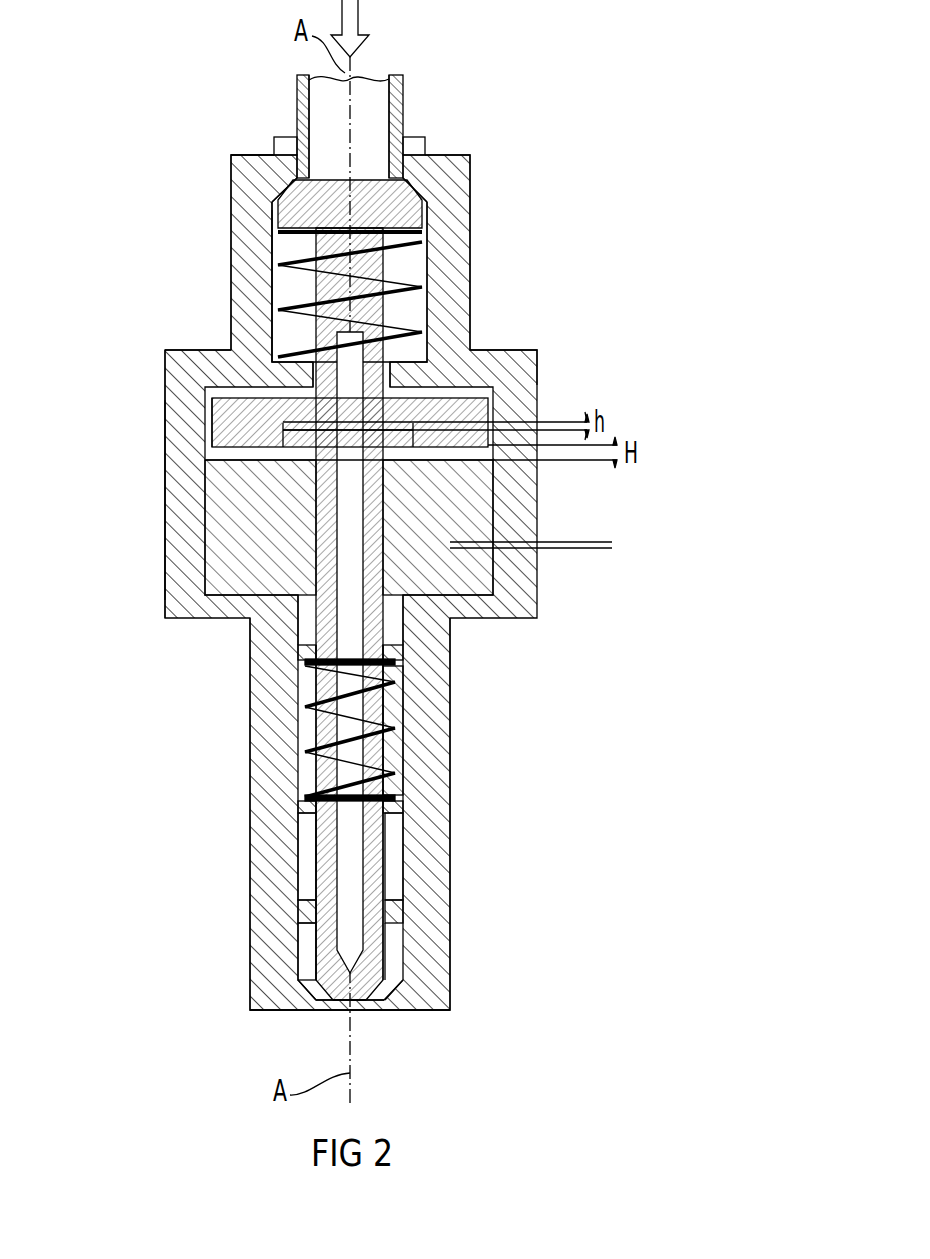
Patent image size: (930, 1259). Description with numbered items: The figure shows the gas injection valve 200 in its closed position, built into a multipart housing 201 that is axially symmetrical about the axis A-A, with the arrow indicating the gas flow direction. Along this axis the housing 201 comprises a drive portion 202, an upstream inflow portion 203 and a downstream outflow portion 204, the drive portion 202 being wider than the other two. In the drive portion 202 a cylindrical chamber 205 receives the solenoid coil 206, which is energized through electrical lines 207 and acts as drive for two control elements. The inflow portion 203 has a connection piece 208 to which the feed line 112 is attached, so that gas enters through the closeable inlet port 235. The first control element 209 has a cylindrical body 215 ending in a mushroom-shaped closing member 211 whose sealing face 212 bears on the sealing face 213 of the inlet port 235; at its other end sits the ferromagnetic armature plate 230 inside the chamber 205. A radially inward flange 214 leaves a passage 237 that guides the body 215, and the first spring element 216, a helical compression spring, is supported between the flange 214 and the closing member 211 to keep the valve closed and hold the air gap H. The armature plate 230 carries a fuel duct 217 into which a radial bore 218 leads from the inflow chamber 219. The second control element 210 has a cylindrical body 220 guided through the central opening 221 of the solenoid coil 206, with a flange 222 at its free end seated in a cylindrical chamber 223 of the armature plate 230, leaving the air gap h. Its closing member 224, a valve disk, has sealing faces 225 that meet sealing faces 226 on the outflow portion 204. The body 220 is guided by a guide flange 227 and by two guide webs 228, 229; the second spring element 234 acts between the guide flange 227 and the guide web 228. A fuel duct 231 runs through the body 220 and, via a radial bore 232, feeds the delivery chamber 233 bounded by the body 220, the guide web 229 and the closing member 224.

The gas injection valve 200 is at (129, 163).
The multipart housing 201 is at (126, 556).
The drive portion 202 is at (538, 385).
The upstream inflow portion 203 is at (471, 186).
The downstream outflow portion 204 is at (252, 681).
The cylindrical chamber 205 is at (532, 360).
The solenoid coil 206 is at (433, 608).
The electrical lines 207 is at (612, 545).
The connection piece 208 is at (287, 137).
The first control element 209 is at (296, 230).
The second control element 210 is at (390, 853).
The mushroom-shaped closing member 211 is at (282, 192).
The sealing face 212 is at (414, 184).
The sealing face 213 is at (268, 152).
The flange 214 is at (408, 377).
The cylindrical body 215 is at (384, 266).
The first spring element 216 is at (428, 240).
The fuel duct 217 is at (203, 379).
The radial bore 218 is at (296, 290).
The inflow chamber 219 is at (304, 246).
The cylindrical body 220 is at (327, 842).
The central opening 221 is at (482, 595).
The flange 222 is at (286, 446).
The cylindrical chamber 223 is at (283, 428).
The closing member 224 is at (388, 1012).
The sealing faces 225 is at (410, 996).
The sealing faces 226 is at (272, 1010).
The guide flange 227 is at (392, 655).
The guide web 228 is at (392, 806).
The guide web 229 is at (392, 910).
The armature plate 230 is at (232, 422).
The fuel duct 231 is at (345, 878).
The radial bore 232 is at (327, 932).
The delivery chamber 233 is at (303, 966).
The second spring element 234 is at (390, 728).
The inlet port 235 is at (390, 167).
The passage 237 is at (300, 330).
The feed line 112 is at (404, 114).